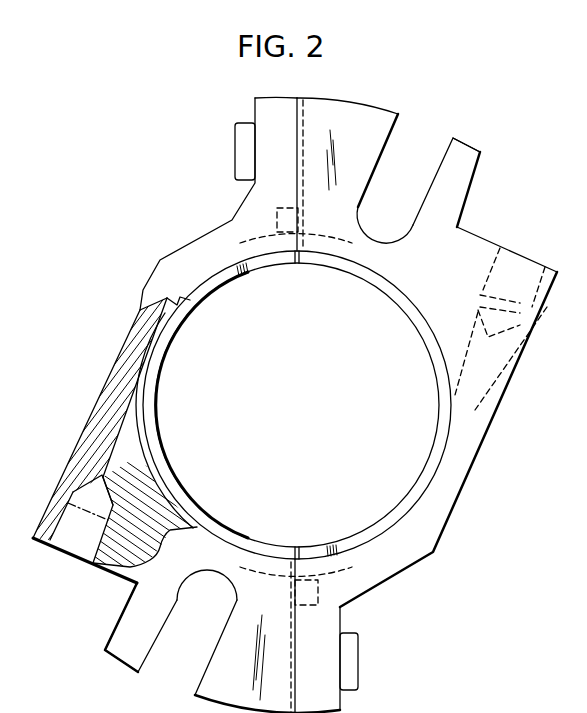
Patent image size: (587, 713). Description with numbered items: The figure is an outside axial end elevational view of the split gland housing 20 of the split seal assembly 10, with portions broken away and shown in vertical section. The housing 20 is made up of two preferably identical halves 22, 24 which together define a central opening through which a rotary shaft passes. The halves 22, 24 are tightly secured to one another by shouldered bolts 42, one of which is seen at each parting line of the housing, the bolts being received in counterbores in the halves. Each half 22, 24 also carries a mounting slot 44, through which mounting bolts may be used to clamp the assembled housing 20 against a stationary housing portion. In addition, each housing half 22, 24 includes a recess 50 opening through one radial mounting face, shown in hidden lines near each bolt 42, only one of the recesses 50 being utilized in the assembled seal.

The split seal assembly 10 is at (228, 215).
The split gland housing 20 is at (385, 105).
The housing half 22 is at (332, 100).
The housing half 24 is at (268, 98).
The shouldered bolts 42 is at (242, 138).
The mounting slots 44 is at (422, 205).
The recess 50 is at (277, 208).